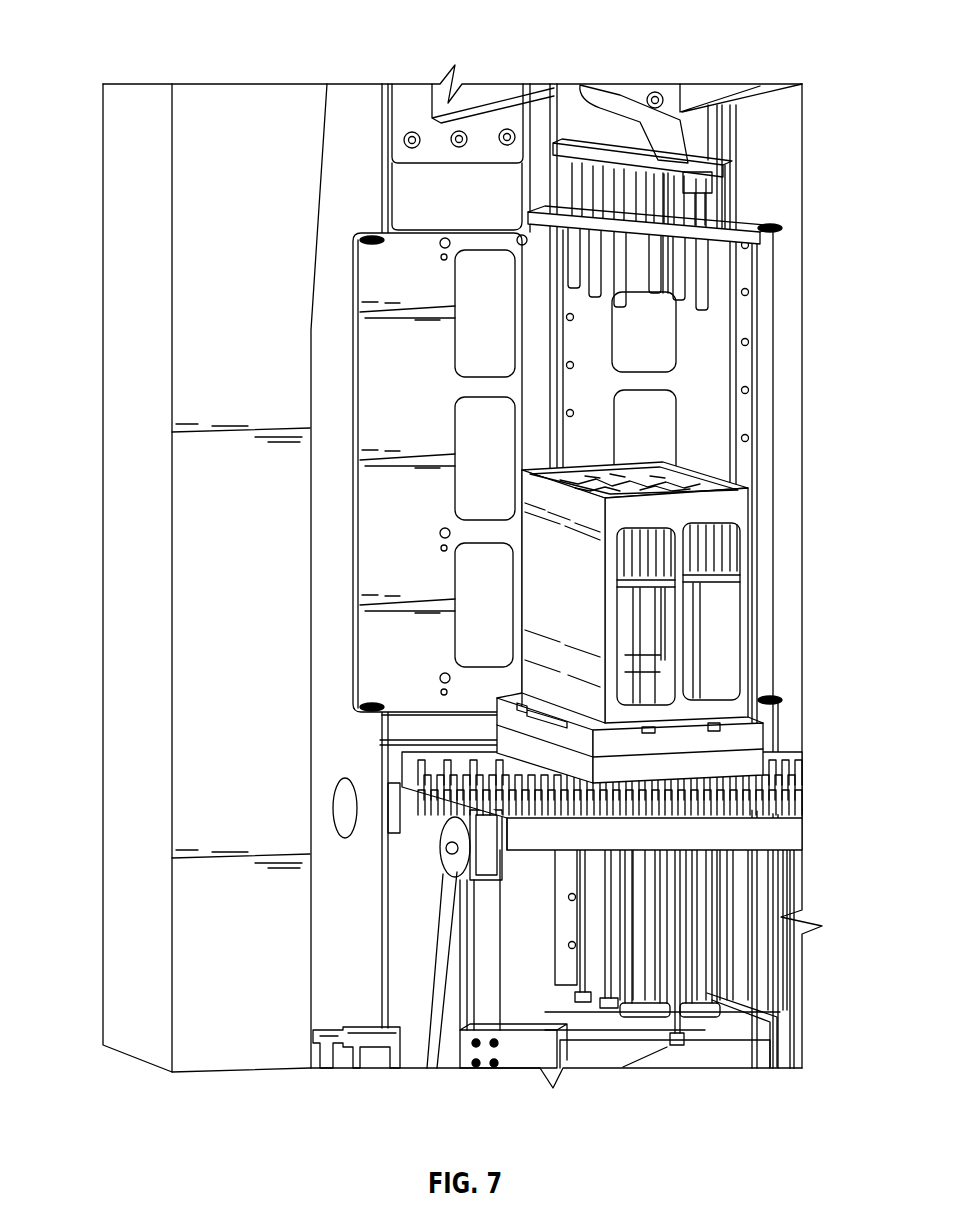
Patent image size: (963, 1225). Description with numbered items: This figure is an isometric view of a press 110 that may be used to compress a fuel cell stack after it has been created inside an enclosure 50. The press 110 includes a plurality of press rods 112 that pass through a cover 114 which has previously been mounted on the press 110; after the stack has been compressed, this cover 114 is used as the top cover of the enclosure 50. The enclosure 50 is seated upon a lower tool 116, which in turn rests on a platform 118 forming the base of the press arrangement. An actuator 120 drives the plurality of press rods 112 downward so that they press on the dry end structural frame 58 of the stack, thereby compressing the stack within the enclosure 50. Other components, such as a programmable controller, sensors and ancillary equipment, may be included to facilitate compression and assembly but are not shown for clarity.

The press 110 is at (150, 48).
The actuator 120 is at (548, 138).
The press rods 112 is at (577, 177).
The cover 114 is at (743, 227).
The dry end structural frame 58 is at (592, 485).
The enclosure 50 is at (752, 498).
The lower tool 116 is at (768, 732).
The platform 118 is at (792, 795).